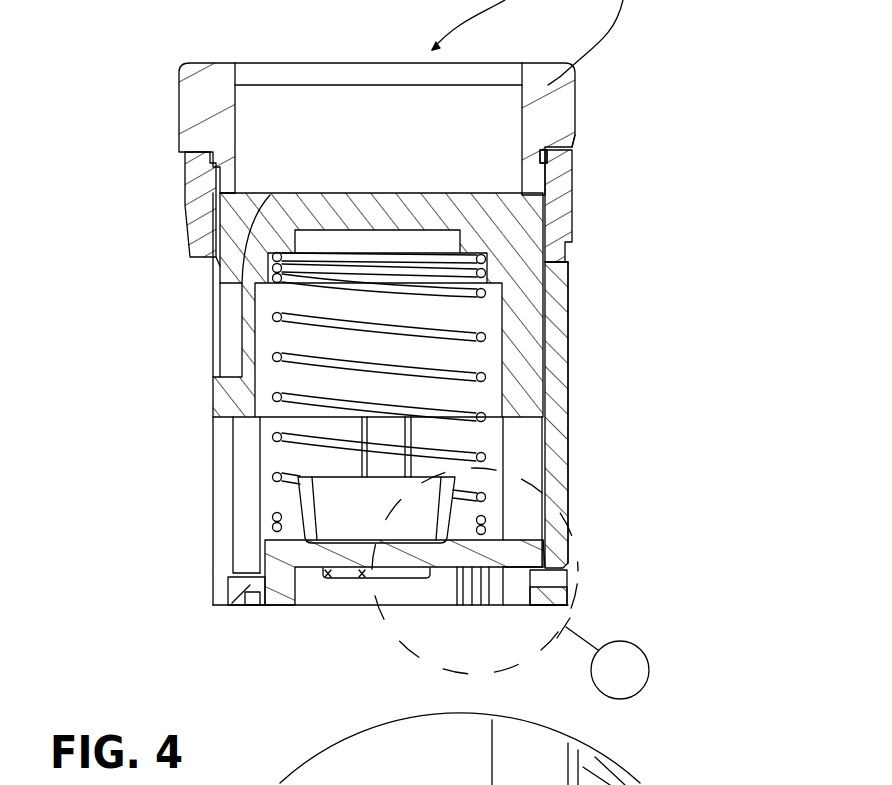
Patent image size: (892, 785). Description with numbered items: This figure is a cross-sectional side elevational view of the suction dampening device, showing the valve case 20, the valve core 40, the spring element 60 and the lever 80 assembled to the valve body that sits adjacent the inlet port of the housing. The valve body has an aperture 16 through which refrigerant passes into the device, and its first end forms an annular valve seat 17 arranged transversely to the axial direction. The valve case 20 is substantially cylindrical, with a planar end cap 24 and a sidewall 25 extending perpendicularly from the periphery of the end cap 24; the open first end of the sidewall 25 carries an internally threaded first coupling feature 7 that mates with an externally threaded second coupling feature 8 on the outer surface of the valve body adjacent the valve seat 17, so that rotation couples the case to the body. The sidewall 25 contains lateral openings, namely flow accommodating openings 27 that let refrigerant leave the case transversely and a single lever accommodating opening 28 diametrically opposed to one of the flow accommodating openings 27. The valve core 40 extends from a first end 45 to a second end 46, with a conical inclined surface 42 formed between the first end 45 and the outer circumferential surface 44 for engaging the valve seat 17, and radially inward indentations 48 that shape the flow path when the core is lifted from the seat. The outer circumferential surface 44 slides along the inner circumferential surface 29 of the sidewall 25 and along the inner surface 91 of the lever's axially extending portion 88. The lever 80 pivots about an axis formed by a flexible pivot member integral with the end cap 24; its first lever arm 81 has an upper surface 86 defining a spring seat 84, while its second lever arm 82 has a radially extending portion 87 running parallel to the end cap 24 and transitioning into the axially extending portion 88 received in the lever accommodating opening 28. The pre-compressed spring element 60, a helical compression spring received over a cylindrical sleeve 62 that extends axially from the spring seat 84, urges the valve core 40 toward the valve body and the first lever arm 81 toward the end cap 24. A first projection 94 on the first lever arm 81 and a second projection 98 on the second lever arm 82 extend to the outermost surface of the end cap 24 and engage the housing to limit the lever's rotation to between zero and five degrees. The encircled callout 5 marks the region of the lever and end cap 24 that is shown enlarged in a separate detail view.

The first coupling feature 7 is at (572, 170).
The second coupling feature 8 is at (543, 156).
The aperture 16 is at (235, 158).
The valve seat 17 is at (247, 227).
The valve case 20 is at (181, 168).
The end cap 24 is at (243, 587).
The sidewall 25 is at (203, 237).
The flow accommodating opening 27 is at (213, 444).
The lever accommodating opening 28 is at (570, 255).
The inner circumferential surface 29 is at (220, 227).
The valve core 40 is at (526, 312).
The inclined surface 42 is at (572, 197).
The outer circumferential surface 44 is at (567, 360).
The first end 45 is at (387, 197).
The second end 46 is at (490, 462).
The indentation 48 is at (222, 277).
The spring element 60 is at (545, 485).
The sleeve 62 is at (290, 490).
The lever 80 is at (366, 580).
The first lever arm 81 is at (330, 577).
The second lever arm 82 is at (573, 543).
The spring seat 84 is at (597, 783).
The upper surface 86 is at (282, 555).
The radially extending portion 87 is at (580, 563).
The axially extending portion 88 is at (550, 387).
The inner surface 91 is at (487, 193).
The first projection 94 is at (282, 600).
The second projection 98 is at (515, 607).
The detail view reference 5 is at (603, 658).